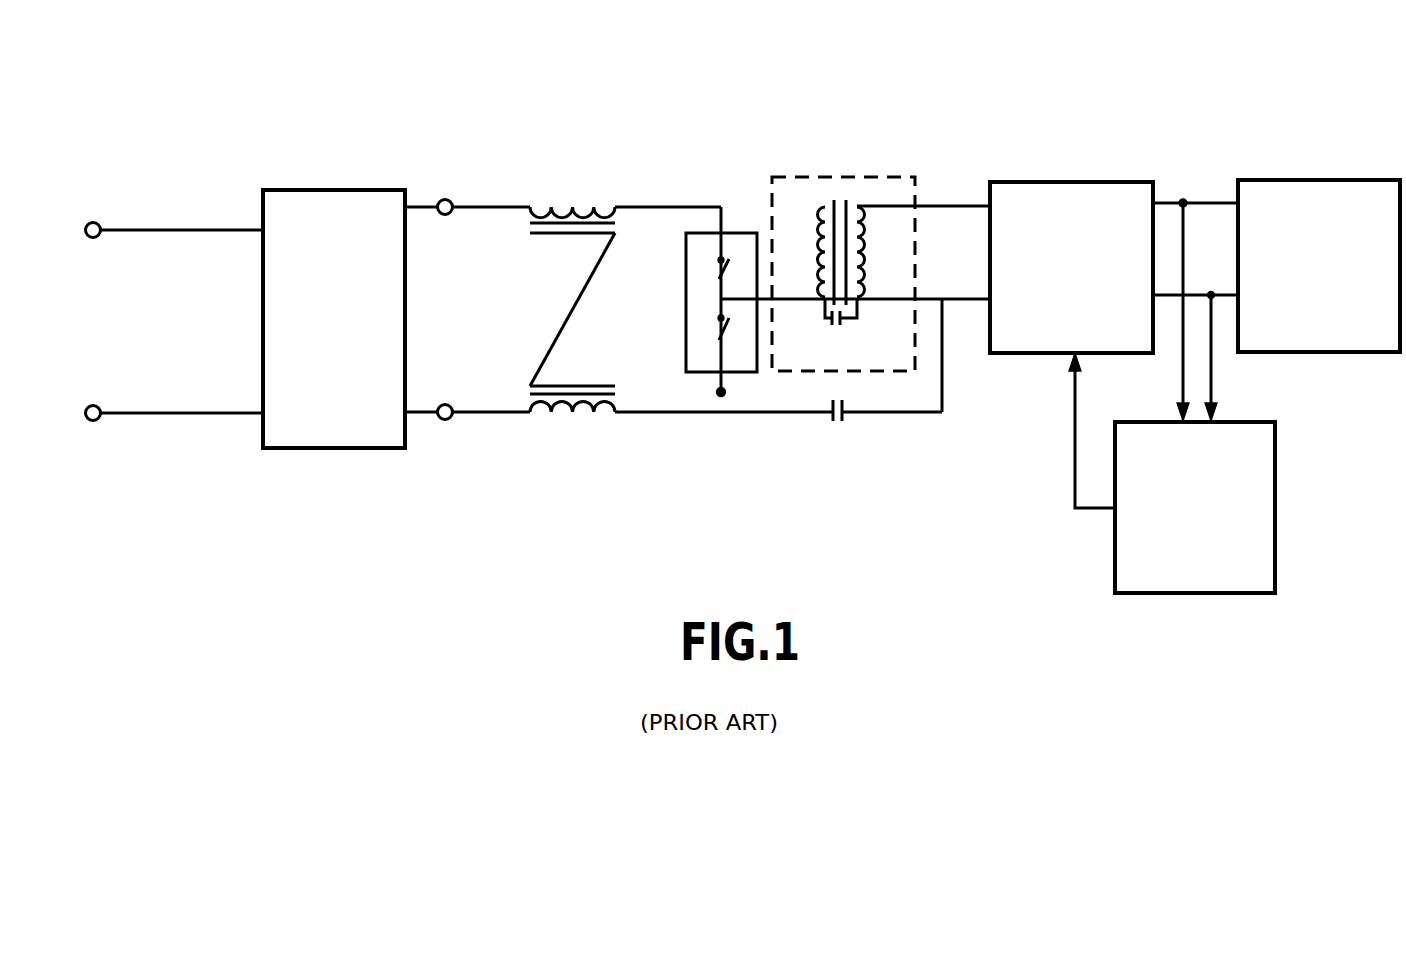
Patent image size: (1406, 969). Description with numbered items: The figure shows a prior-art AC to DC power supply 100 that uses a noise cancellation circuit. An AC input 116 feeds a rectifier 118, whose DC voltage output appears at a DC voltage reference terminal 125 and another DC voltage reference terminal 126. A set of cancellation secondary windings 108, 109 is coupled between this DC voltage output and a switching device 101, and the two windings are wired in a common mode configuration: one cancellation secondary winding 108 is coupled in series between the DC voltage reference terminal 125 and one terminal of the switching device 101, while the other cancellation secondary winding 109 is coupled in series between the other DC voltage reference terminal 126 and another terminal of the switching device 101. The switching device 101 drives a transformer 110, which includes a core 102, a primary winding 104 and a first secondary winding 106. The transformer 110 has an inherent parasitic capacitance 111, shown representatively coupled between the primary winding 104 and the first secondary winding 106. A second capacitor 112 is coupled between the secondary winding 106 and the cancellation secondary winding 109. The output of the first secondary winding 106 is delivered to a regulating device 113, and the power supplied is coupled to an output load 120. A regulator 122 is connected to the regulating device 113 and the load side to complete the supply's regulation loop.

The AC to DC power supply 100 is at (680, 69).
The AC input 116 is at (155, 322).
The rectifier 118 is at (358, 340).
The DC voltage reference terminal 125 is at (447, 199).
The DC voltage reference terminal 126 is at (447, 420).
The cancellation secondary winding 108 is at (558, 207).
The cancellation secondary winding 109 is at (565, 412).
The switching device 101 is at (686, 318).
The transformer 110 is at (847, 228).
The primary winding 104 is at (822, 215).
The core 102 is at (846, 200).
The first secondary winding 106 is at (860, 216).
The parasitic capacitance C1 111 is at (841, 320).
The capacitor C2 112 is at (890, 447).
The regulating device 113 is at (1095, 326).
The output load 120 is at (1344, 307).
The regulator 122 is at (1219, 546).